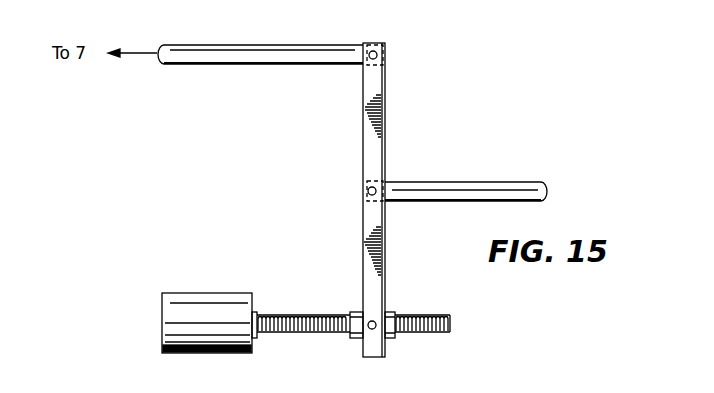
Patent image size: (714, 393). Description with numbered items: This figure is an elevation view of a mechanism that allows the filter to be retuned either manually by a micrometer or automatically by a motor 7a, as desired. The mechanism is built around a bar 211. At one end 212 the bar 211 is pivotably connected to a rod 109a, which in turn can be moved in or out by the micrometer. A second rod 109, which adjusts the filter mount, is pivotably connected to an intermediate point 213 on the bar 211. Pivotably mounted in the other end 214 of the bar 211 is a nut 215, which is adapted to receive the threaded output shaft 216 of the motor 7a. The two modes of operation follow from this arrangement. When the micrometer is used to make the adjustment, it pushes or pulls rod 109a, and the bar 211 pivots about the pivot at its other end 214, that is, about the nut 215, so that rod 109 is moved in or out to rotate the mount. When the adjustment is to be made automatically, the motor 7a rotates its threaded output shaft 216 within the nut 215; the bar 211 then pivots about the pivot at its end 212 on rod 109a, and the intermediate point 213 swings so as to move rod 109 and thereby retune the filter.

The motor 7a is at (162, 312).
The rod 109 is at (495, 182).
The rod 109a is at (262, 45).
The bar 211 is at (377, 145).
The end 212 is at (385, 54).
The intermediate point 213 is at (367, 188).
The other end 214 is at (369, 321).
The nut 215 is at (390, 312).
The threaded output shaft 216 is at (318, 337).